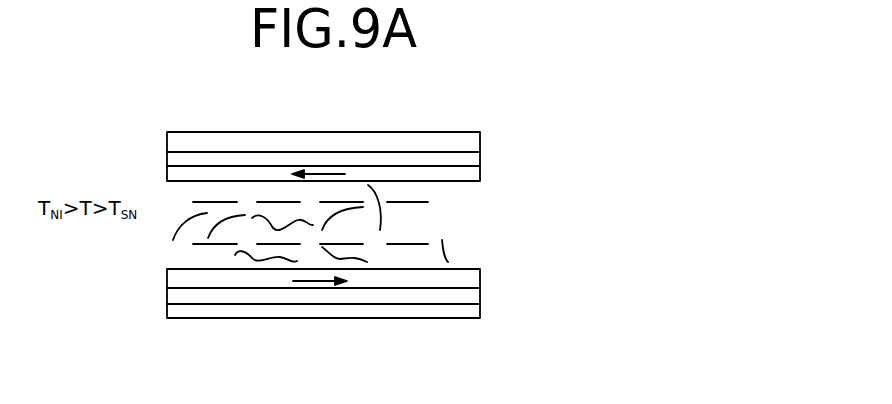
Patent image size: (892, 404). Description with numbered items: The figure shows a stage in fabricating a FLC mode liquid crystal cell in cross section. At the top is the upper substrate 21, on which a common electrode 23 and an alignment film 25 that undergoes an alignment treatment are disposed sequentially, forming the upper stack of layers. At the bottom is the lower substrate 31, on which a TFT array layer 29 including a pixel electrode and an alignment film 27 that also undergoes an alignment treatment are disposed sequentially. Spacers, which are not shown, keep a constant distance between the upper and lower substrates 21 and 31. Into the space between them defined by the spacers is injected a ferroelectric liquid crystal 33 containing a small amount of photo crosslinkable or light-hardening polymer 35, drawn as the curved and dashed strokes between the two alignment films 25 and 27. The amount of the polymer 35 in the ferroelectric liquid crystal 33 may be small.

The upper substrate 21 is at (480, 142).
The common electrode 23 is at (480, 160).
The alignment film 25 is at (480, 177).
The alignment film 27 is at (480, 278).
The TFT array layer 29 is at (480, 299).
The lower substrate 31 is at (480, 316).
The ferroelectric liquid crystal 33 is at (193, 245).
The photo crosslinkable or light-hardening polymer 35 is at (397, 222).